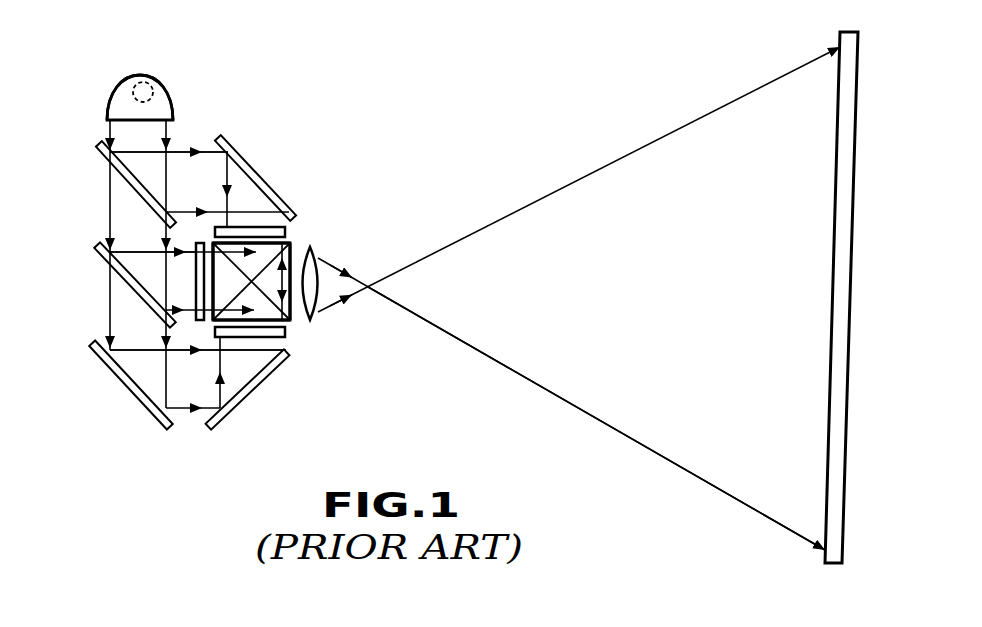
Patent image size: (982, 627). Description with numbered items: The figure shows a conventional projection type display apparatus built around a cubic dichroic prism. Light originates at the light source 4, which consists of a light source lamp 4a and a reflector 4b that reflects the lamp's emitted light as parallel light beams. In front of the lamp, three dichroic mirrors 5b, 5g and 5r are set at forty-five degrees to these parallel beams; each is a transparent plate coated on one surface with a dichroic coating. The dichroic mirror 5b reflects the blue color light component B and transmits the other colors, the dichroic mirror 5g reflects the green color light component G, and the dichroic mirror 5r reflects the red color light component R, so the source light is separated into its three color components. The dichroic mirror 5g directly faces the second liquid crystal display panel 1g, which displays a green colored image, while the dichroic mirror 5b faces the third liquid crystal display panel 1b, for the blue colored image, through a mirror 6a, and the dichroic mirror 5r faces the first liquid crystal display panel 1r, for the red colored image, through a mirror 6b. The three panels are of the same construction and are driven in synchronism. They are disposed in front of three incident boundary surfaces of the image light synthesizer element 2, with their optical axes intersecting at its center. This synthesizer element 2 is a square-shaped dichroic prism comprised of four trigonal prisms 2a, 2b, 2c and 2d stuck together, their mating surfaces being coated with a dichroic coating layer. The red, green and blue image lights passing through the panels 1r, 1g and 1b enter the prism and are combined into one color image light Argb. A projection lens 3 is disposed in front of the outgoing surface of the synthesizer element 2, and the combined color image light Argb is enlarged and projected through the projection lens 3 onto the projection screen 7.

The light source 4 is at (122, 78).
The light source lamp 4a is at (148, 76).
The reflector 4b is at (118, 100).
The dichroic mirror 5b is at (97, 152).
The dichroic mirror 5g is at (97, 250).
The dichroic mirror 5r is at (112, 370).
The mirror 6a is at (245, 160).
The mirror 6b is at (225, 415).
The second liquid crystal display panel 1g is at (196, 243).
The third liquid crystal display panel 1b is at (268, 237).
The first liquid crystal display panel 1r is at (248, 338).
The image light synthesizer element 2 is at (293, 322).
The trigonal prism 2a is at (225, 287).
The trigonal prism 2b is at (272, 340).
The trigonal prism 2c is at (292, 245).
The trigonal prism 2d is at (245, 243).
The projection lens 3 is at (320, 295).
The projection screen 7 is at (838, 400).
The blue color light component B is at (187, 150).
The green color light component G is at (138, 251).
The red color light component R is at (130, 349).
The color image light Argb is at (692, 477).